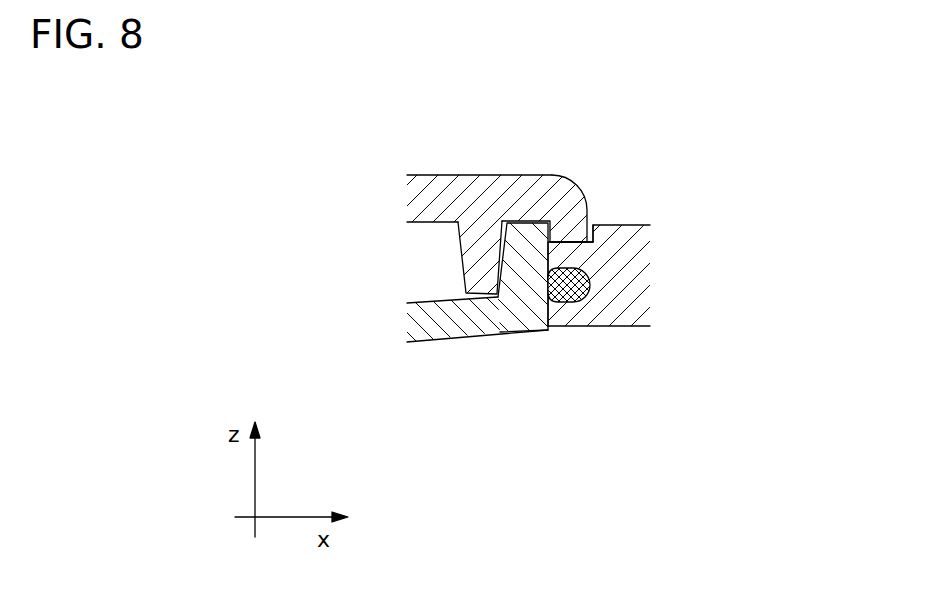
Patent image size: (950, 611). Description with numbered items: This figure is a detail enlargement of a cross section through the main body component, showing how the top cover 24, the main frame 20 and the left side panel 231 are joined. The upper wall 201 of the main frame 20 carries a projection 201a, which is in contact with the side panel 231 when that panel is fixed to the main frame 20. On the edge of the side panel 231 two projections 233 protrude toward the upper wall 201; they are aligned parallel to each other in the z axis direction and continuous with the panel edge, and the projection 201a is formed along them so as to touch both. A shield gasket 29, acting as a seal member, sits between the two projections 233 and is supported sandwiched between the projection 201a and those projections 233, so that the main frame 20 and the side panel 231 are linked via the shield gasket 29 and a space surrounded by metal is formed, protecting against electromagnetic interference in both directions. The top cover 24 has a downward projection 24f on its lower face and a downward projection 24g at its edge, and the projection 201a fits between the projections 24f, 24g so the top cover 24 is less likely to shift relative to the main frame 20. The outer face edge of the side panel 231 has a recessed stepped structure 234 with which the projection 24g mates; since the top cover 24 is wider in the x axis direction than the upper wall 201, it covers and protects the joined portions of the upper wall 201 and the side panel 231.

The top cover 24 is at (494, 198).
The projection 24f is at (461, 262).
The projection 24g is at (570, 221).
The main frame 20 is at (429, 325).
The upper wall 201 is at (458, 325).
The projection 201a is at (528, 280).
The left side panel 231 is at (663, 278).
The projection 233 is at (596, 219).
The stepped structure 234 is at (591, 243).
The shield gasket 29 is at (573, 287).